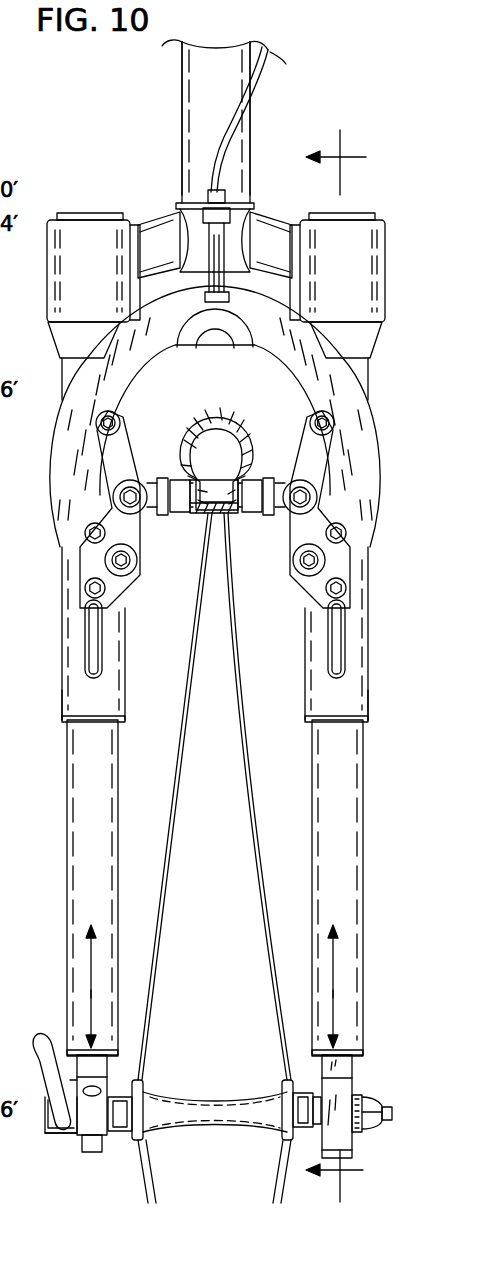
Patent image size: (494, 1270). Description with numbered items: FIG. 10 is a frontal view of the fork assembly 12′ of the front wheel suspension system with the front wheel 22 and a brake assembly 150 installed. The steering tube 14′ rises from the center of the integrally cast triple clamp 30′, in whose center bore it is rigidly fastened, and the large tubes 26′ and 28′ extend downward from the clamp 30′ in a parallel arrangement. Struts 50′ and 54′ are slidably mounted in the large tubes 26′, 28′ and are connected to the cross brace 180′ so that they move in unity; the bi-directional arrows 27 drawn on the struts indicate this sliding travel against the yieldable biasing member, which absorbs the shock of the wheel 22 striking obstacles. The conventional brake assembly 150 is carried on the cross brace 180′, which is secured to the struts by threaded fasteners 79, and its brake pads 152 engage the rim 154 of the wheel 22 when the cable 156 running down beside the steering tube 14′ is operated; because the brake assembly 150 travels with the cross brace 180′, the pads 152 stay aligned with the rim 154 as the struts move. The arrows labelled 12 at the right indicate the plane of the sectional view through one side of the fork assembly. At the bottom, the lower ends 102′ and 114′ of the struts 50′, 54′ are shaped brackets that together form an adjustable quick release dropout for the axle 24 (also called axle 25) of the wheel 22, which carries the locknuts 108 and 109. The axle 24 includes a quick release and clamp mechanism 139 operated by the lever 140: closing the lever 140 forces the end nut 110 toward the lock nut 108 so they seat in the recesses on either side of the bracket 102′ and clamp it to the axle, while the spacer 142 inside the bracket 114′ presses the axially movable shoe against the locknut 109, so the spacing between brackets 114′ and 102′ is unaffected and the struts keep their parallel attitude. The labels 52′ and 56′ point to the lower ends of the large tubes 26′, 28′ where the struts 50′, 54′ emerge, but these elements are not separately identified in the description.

The fork assembly 12′ is at (60, 150).
The fork assembly 12 is at (340, 666).
The steering tube 14′ is at (183, 88).
The cable 156 is at (223, 152).
The triple clamp 30′ is at (160, 220).
The large tube 28′ is at (64, 628).
The large tube 26′ is at (368, 605).
The left slider tube 56′ is at (62, 708).
The right slider tube 52′ is at (368, 708).
The strut 54′ is at (66, 948).
The strut 50′ is at (363, 987).
The cross brace 180′ is at (370, 437).
The brake assembly 150 is at (157, 440).
The threaded fasteners 79 is at (95, 538).
The brake pads 152 is at (178, 517).
The rim 154 is at (227, 515).
The front wheel 22 is at (253, 417).
The axle 25 is at (200, 1118).
The locknut 109 is at (110, 1093).
The lock nut 108 is at (314, 1137).
The end of strut 114′ is at (107, 1068).
The end of strut 102′ is at (350, 1105).
The axle 24 is at (382, 1106).
The end nut 110 is at (370, 1130).
The bi-directional arrows 27 is at (333, 993).
The lever 140 is at (35, 1045).
The spacer 142 is at (76, 1080).
The quick release and clamp mechanism 139 is at (52, 1141).